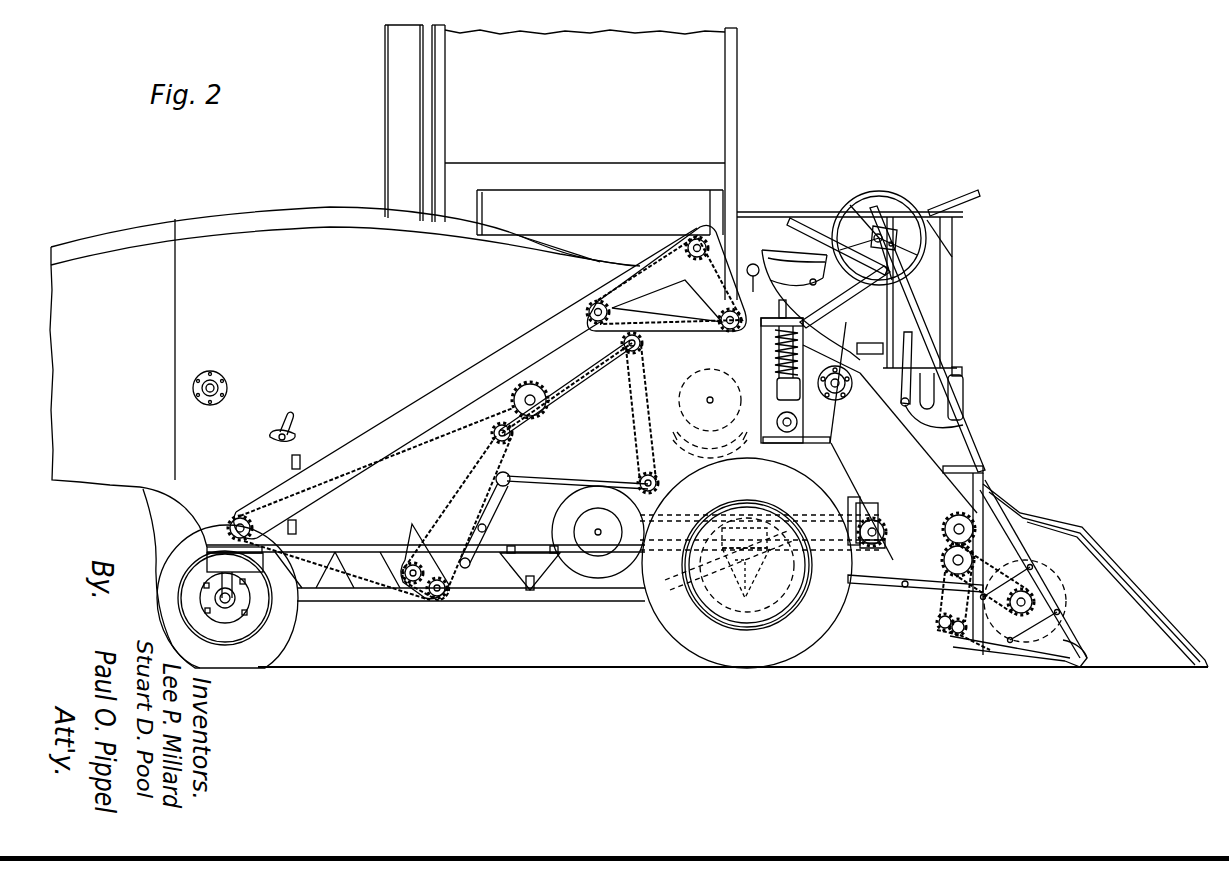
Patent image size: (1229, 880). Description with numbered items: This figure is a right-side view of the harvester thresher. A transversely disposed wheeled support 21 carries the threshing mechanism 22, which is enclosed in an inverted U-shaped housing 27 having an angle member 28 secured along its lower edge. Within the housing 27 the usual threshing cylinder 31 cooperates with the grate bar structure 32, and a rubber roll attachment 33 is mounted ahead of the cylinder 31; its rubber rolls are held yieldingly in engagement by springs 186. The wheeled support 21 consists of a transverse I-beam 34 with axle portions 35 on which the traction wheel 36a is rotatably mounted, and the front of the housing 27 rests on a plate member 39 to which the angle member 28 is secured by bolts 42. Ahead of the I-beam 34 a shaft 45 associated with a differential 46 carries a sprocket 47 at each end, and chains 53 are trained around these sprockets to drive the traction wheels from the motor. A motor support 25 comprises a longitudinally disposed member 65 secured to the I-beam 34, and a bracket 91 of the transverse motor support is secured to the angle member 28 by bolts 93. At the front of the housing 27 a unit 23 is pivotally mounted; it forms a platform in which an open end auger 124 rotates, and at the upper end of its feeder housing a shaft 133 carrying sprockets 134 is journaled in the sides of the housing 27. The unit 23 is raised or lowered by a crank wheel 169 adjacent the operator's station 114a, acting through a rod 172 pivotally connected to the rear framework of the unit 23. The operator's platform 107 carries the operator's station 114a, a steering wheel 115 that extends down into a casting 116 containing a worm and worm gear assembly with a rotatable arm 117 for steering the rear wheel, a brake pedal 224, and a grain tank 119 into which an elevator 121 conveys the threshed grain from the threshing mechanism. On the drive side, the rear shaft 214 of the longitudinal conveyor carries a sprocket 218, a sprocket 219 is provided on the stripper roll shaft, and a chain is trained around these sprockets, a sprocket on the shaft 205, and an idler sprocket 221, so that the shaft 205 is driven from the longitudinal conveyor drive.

The threshing mechanism 22 is at (314, 203).
The inverted U-shaped housing 27 is at (341, 238).
The grain tank 119 is at (397, 128).
The elevator 121 is at (400, 145).
The crank wheel 169 is at (890, 195).
The steering wheel 115 is at (962, 196).
The operator's platform 107 is at (822, 203).
The operator's station 114a is at (778, 255).
The springs 186 is at (775, 347).
The threshing cylinder 31 is at (736, 396).
The grate bar structure 32 is at (720, 448).
The rubber roll attachment 33 is at (792, 456).
The shaft 133 is at (843, 403).
The sprockets 134 is at (832, 430).
The brake pedal 224 is at (904, 338).
The casting 116 is at (960, 385).
The rotatable arm 117 is at (932, 392).
The rod 172 is at (955, 446).
The angle member 28 is at (355, 553).
The longitudinally disposed member 65 is at (383, 603).
The bolts 93 is at (510, 546).
The bracket 91 is at (542, 575).
The motor support 25 is at (299, 638).
The wheeled support 21 is at (832, 630).
The traction wheel 36a is at (840, 616).
The bolts 42 is at (760, 532).
The axle portions 35 is at (757, 566).
The plate member 39 is at (752, 580).
The transverse I-beam 34 is at (752, 596).
The chains 53 is at (863, 503).
The differential 46 is at (866, 515).
The sprocket 47 is at (876, 532).
The shaft 45 is at (882, 541).
The unit 23 is at (1126, 546).
The open end auger 124 is at (1066, 593).
The idler sprocket 221 is at (945, 533).
The shaft 205 is at (945, 557).
The sprocket 218 is at (938, 618).
The sprocket 219 is at (940, 628).
The rear shaft 214 is at (962, 636).